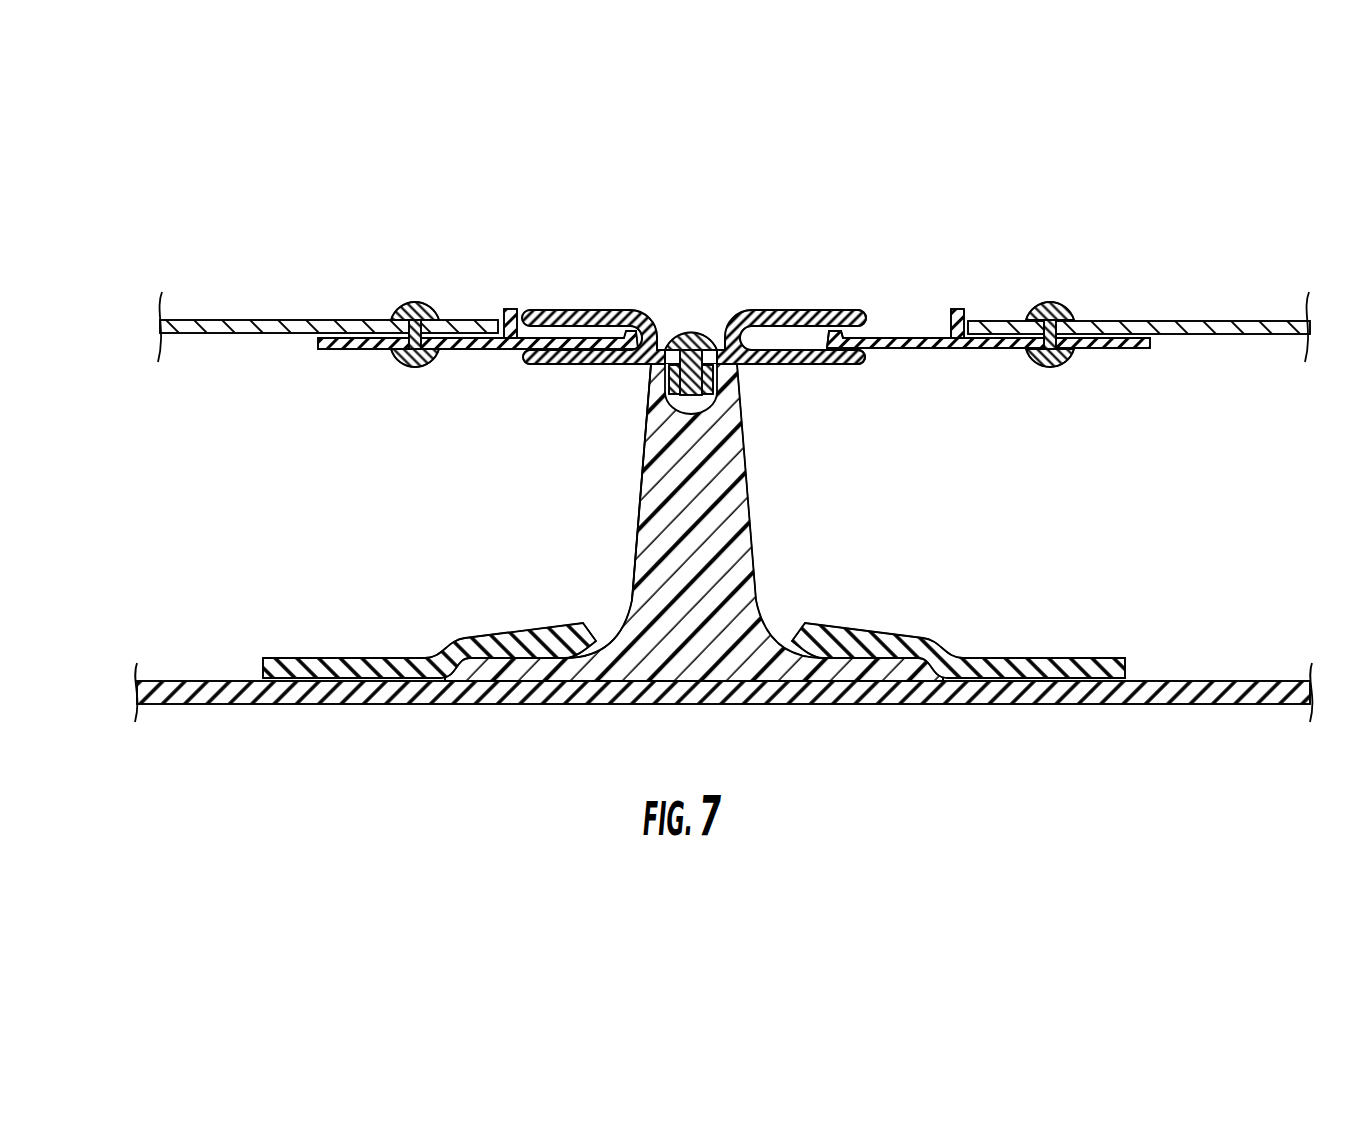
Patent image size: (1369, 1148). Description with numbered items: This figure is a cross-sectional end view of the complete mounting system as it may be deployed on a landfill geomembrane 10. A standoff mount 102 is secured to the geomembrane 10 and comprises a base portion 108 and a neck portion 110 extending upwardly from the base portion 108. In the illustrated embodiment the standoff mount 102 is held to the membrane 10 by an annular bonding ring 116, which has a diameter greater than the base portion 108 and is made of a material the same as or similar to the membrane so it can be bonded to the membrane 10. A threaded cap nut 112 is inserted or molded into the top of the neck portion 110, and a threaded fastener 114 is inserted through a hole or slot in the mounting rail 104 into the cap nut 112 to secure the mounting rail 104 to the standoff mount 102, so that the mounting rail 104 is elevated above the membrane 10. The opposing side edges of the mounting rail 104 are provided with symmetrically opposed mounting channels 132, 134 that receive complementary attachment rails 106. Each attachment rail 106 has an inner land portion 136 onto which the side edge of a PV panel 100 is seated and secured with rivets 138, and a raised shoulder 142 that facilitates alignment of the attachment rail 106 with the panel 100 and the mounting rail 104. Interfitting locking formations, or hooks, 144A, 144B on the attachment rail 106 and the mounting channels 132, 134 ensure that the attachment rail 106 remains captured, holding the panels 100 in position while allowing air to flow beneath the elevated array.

The substrate 10 is at (1218, 690).
The PV panel 100 is at (1172, 321).
The standoff mount 102 is at (699, 576).
The mounting rail 104 is at (698, 292).
The attachment rail 106 is at (714, 326).
The base portion 108 is at (847, 675).
The neck portion 110 is at (645, 513).
The cap nut 112 is at (708, 372).
The threaded fastener 114 is at (701, 331).
The bonding ring 116 is at (1003, 660).
The mounting channel 132 is at (535, 312).
The mounting channel 134 is at (828, 243).
The land portion 136 is at (1098, 350).
The rivet 138 is at (1053, 304).
The raised shoulder 142 is at (960, 308).
The locking formation 144A is at (838, 358).
The locking formation 144B is at (846, 311).